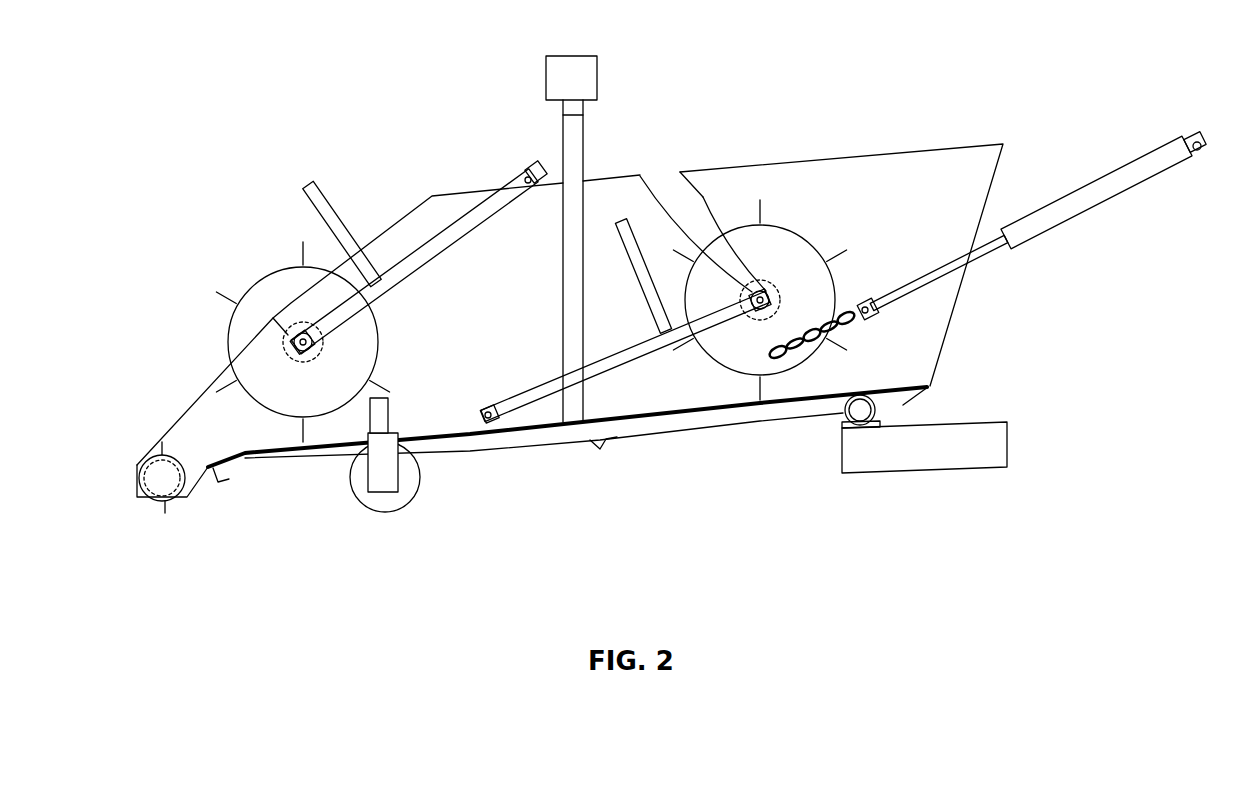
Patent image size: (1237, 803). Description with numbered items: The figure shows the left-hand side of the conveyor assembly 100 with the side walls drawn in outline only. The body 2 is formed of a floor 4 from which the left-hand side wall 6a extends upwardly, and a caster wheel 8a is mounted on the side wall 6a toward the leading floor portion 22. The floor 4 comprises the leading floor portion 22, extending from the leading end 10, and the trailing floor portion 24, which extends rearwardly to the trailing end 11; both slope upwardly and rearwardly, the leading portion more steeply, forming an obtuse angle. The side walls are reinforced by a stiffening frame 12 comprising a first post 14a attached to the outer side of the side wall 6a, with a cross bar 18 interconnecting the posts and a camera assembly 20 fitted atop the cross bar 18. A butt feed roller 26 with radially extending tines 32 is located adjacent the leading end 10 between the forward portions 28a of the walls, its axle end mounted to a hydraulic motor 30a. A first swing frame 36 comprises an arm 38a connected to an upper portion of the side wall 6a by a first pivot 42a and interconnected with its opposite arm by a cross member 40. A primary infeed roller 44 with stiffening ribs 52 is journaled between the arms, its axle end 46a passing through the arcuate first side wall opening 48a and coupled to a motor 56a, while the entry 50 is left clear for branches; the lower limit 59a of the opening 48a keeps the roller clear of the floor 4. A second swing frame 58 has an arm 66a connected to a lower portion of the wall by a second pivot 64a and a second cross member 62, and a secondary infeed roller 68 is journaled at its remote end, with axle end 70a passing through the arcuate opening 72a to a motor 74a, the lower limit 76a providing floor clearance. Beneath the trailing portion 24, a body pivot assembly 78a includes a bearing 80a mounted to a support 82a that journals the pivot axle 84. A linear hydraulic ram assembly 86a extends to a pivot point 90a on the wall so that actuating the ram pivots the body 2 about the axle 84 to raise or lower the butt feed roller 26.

The conveyor assembly 100 is at (172, 148).
The body 2 is at (880, 202).
The floor 4 is at (632, 424).
The left-hand side wall 6a is at (443, 208).
The left-hand side caster wheel 8a is at (388, 502).
The leading end 10 is at (208, 470).
The trailing end 11 is at (930, 387).
The stiffening frame 12 is at (582, 134).
The first post 14a is at (568, 162).
The cross bar 18 is at (568, 108).
The camera assembly 20 is at (578, 77).
The leading floor portion 22 is at (232, 488).
The trailing floor portion 24 is at (605, 457).
The butt feed roller 26 is at (175, 458).
The forward portion of left-hand side wall 28a is at (162, 452).
The hydraulic motor 30a is at (160, 500).
The tines 32 is at (137, 478).
The first swing frame 36 is at (392, 240).
The left-hand side arm of first swing frame 38a is at (423, 256).
The first swing frame cross member 40 is at (303, 190).
The first pivot 42a is at (529, 185).
The primary infeed roller 44 is at (302, 342).
The axle end of primary infeed roller 46a is at (318, 347).
The first side wall opening 48a is at (280, 317).
The entry to primary infeed roller 50 is at (220, 420).
The stiffening ribs 52 is at (224, 300).
The primary infeed roller motor 56a is at (316, 352).
The second swing frame 58 is at (655, 322).
The lower limit of first side wall opening 59a is at (225, 432).
The second cross member 62 is at (633, 245).
The second pivot 64a is at (487, 409).
The second swing frame arm 66a is at (615, 366).
The secondary infeed roller 68 is at (759, 300).
The axle end of secondary infeed roller 70a is at (762, 298).
The second side wall opening 72a is at (700, 198).
The secondary infeed roller motor 74a is at (758, 318).
The lower limit of second side wall opening 76a is at (775, 306).
The body pivot assembly 78a is at (815, 452).
The bearing 80a is at (842, 415).
The support 82a is at (907, 457).
The pivot axle 84 is at (878, 410).
The linear hydraulic ram assembly 86a is at (1066, 244).
The pivot point 90a is at (770, 357).